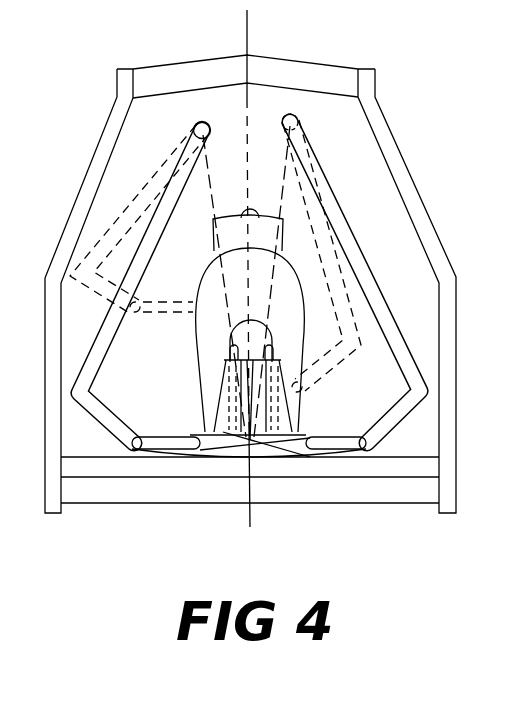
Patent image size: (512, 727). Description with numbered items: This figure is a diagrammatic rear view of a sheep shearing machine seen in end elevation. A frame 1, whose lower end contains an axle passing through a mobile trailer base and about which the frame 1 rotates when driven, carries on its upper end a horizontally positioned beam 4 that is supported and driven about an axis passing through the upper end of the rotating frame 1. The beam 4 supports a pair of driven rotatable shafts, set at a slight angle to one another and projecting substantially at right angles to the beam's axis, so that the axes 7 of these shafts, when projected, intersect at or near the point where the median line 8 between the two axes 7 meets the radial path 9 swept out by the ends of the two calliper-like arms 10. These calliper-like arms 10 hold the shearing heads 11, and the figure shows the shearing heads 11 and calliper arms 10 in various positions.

The frame 1 is at (57, 258).
The horizontally positioned beam 4 is at (321, 72).
The axes of the shafts 7 is at (291, 121).
The median line 8 is at (249, 33).
The radial path 9 is at (237, 457).
The calliper-like arms 10 is at (103, 352).
The shearing heads 11 is at (165, 440).